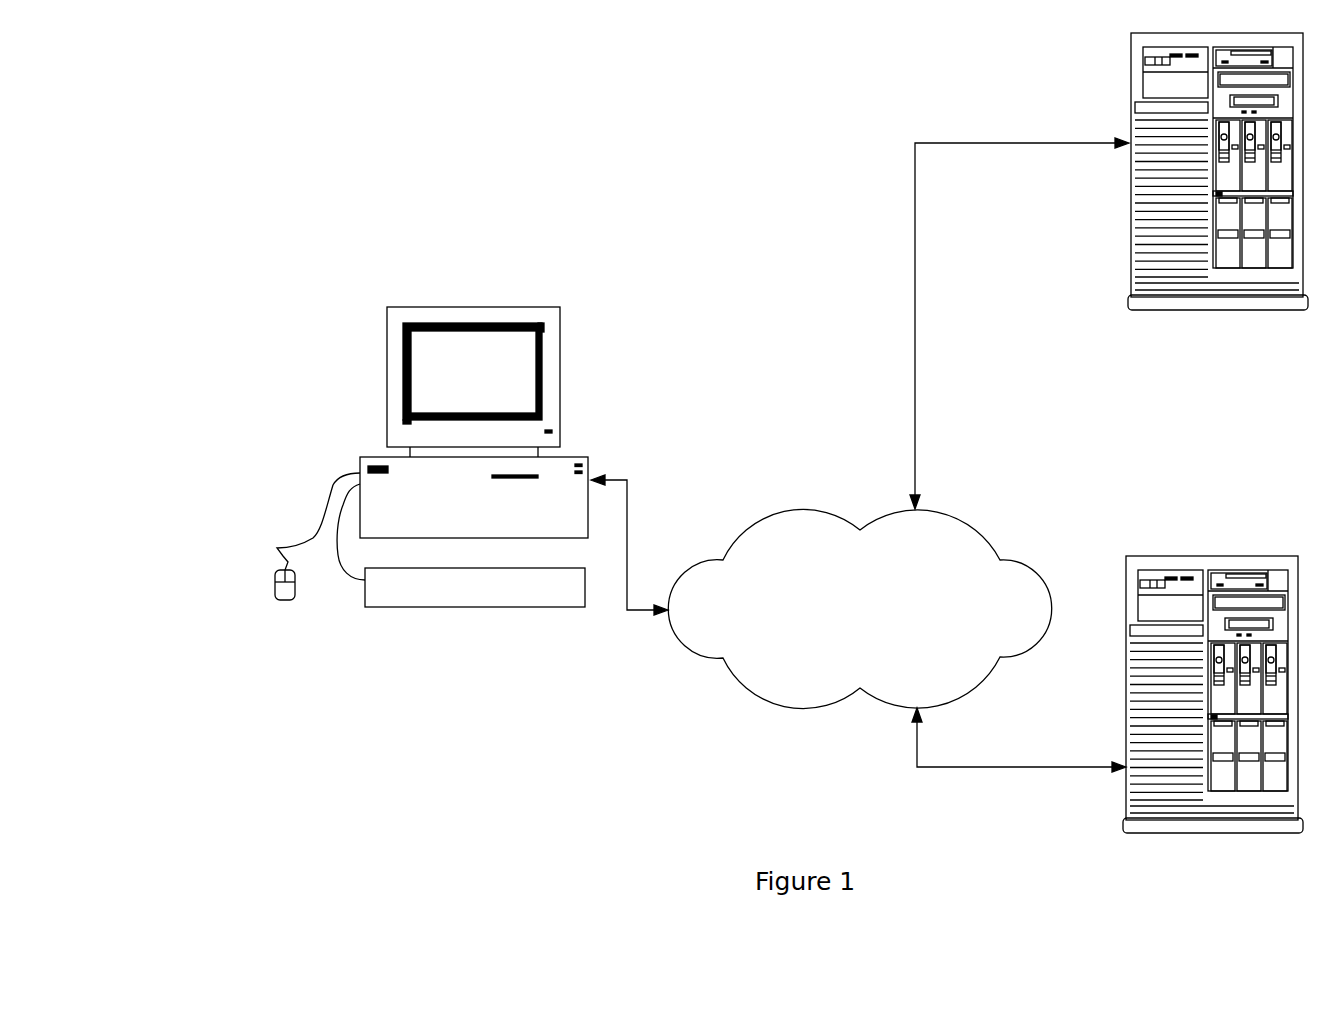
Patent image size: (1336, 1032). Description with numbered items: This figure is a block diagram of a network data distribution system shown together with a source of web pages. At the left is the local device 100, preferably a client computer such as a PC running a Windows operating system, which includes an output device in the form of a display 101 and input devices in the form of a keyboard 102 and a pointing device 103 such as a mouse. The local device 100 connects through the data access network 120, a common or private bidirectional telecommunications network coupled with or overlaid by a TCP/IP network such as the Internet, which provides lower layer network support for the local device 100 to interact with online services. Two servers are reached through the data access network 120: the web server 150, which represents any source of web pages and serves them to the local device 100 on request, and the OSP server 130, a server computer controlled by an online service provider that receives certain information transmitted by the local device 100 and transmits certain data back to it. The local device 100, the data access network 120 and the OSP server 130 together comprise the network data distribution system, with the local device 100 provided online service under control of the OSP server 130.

The local device 100 is at (386, 456).
The display 101 is at (387, 341).
The keyboard 102 is at (366, 599).
The pointing device 103 is at (275, 578).
The data access network 120 is at (859, 608).
The OSP server 130 is at (1213, 730).
The web server 150 is at (1219, 201).